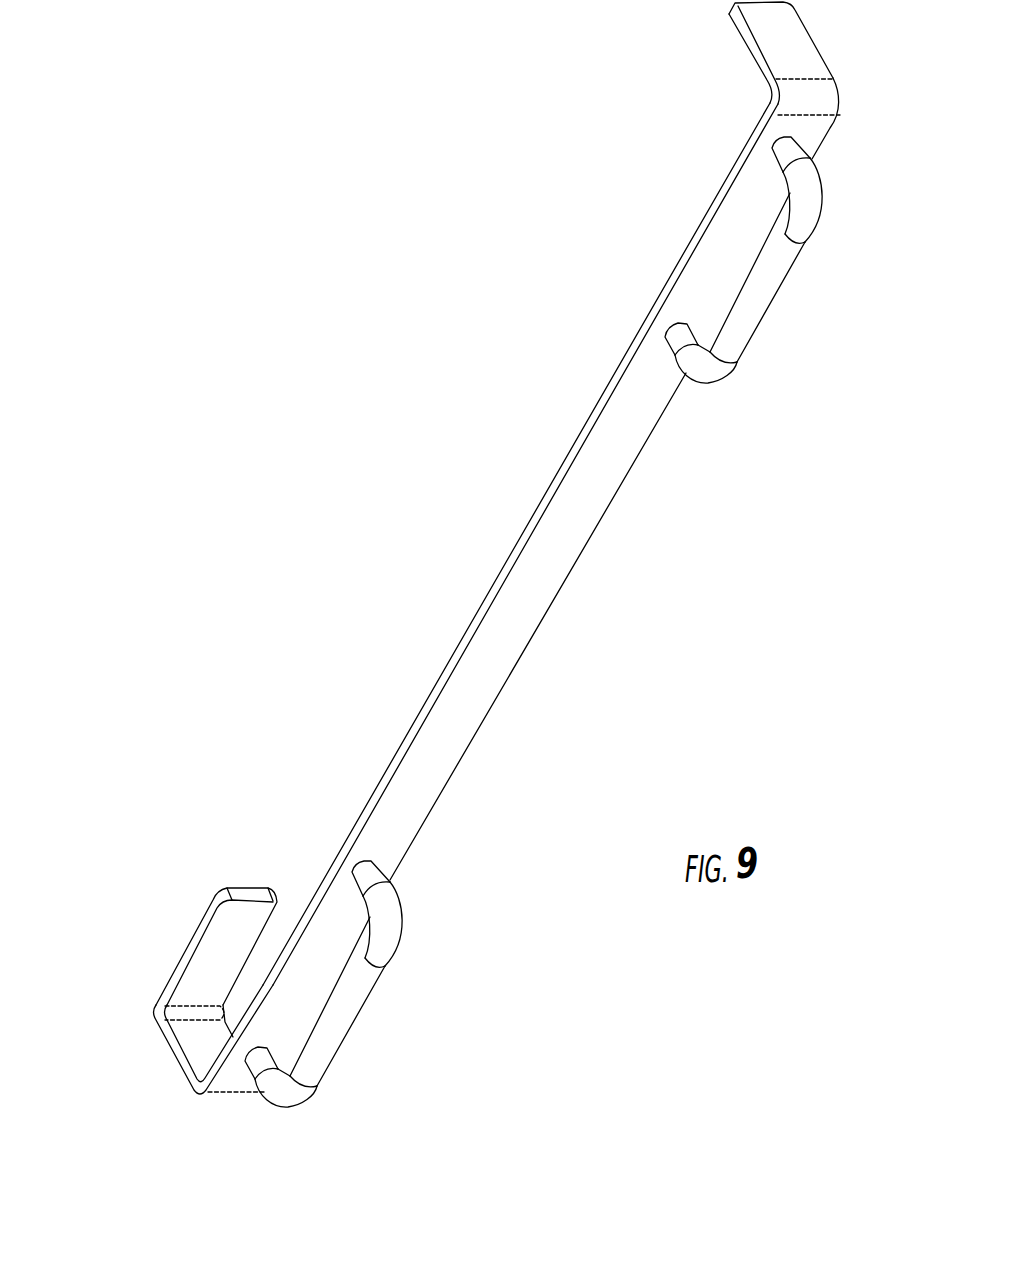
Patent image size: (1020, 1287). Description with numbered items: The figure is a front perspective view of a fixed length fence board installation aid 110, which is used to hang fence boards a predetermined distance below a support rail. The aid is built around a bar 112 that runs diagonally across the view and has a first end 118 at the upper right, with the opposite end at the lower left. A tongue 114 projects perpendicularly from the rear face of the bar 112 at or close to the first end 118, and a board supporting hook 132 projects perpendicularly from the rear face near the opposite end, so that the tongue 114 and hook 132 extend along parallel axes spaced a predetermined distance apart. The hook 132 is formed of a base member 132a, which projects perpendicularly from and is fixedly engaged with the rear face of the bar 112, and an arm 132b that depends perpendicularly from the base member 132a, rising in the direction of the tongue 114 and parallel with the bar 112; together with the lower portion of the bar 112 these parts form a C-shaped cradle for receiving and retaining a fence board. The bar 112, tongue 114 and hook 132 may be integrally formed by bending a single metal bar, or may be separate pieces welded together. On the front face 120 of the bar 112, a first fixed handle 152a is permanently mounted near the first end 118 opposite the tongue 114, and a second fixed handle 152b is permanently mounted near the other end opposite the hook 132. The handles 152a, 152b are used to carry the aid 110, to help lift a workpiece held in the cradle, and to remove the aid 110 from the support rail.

The fence board installation aid 110 is at (584, 657).
The bar 112 is at (551, 486).
The tongue 114 is at (797, 52).
The first end 118 is at (822, 127).
The front face 120 is at (577, 506).
The board supporting hook 132 is at (146, 1002).
The base member 132a is at (168, 1048).
The arm 132b is at (200, 917).
The first fixed handle 152a is at (780, 293).
The second fixed handle 152b is at (348, 1018).